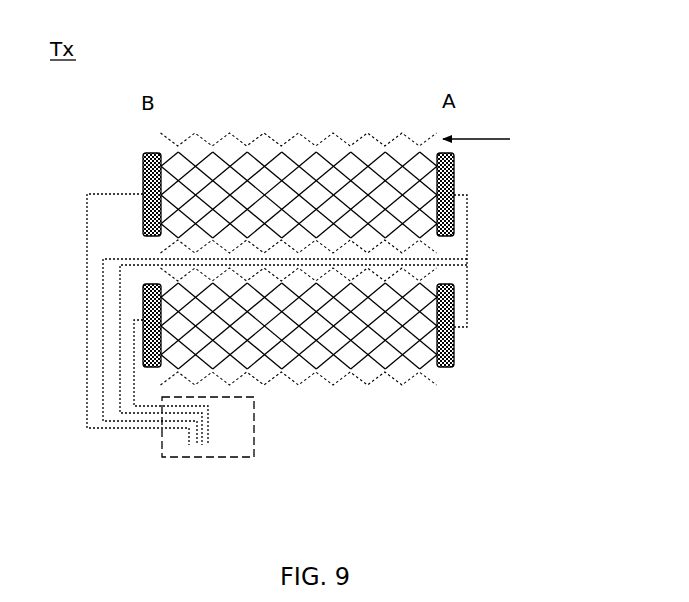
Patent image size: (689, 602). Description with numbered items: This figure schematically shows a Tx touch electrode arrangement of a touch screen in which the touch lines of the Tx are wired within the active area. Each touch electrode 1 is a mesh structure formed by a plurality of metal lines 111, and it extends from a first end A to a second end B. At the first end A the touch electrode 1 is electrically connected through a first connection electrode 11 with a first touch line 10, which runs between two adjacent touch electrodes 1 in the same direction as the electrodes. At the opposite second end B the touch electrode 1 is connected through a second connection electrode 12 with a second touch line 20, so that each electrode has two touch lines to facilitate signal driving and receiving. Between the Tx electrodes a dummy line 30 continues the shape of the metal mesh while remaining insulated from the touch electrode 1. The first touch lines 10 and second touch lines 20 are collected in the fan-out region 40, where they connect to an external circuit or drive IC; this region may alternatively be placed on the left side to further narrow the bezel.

The touch electrode 1 is at (318, 313).
The metal lines 111 is at (245, 247).
The second connection electrode 12 is at (110, 253).
The first connection electrode 11 is at (490, 259).
The first touch line 10 is at (303, 320).
The second touch line 20 is at (120, 319).
The dummy line 30 is at (493, 140).
The fan-out region 40 is at (228, 457).